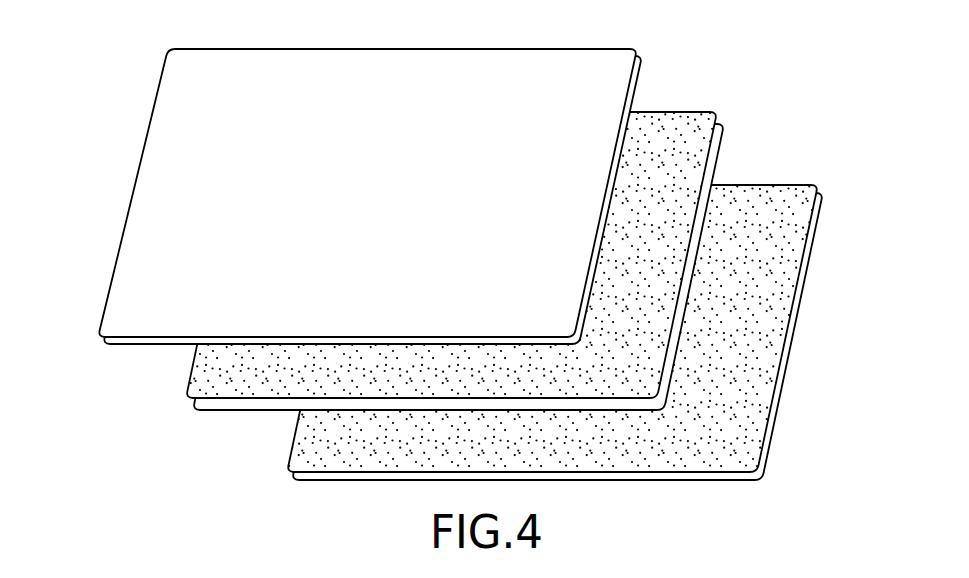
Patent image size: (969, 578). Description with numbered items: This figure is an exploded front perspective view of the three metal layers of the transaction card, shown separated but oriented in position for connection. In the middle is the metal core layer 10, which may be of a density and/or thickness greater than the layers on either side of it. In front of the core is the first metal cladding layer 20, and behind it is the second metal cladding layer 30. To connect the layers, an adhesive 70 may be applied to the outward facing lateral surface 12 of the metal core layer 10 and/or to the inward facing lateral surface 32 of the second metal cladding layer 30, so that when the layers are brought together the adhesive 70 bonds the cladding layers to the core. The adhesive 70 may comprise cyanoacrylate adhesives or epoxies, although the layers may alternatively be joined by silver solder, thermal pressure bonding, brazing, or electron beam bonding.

The metal core layer 10 is at (476, 299).
The outward facing lateral surface 12 is at (701, 143).
The first metal cladding layer 20 is at (100, 348).
The second metal cladding layer 30 is at (556, 343).
The inward facing lateral surface 32 is at (800, 233).
The adhesive 70 is at (687, 172).